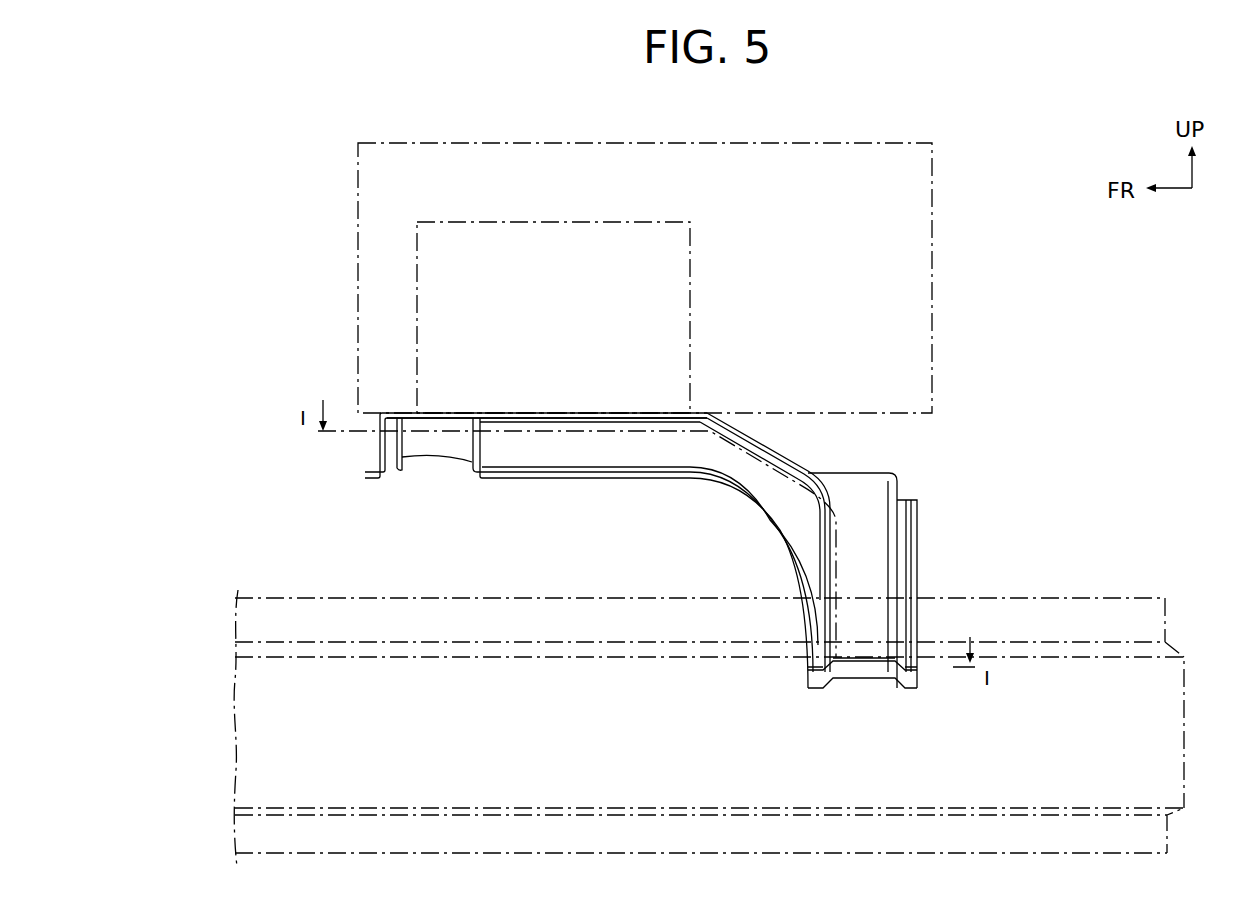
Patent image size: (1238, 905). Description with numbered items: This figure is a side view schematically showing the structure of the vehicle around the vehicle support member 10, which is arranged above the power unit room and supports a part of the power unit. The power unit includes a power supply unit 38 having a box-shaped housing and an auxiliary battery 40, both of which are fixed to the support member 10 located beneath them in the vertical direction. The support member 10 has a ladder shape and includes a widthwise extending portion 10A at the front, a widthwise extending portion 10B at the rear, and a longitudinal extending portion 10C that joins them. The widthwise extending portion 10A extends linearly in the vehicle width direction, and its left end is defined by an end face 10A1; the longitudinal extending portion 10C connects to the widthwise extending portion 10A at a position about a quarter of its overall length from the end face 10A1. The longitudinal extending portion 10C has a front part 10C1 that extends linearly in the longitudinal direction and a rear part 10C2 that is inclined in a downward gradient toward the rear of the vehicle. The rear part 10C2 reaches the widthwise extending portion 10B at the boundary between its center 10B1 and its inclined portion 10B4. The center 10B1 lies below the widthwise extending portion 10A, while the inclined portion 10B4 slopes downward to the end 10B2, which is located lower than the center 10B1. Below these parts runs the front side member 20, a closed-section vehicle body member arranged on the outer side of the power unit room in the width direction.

The vehicle support member 10 is at (716, 544).
The widthwise extending portion 10A is at (536, 432).
The end face 10A1 is at (410, 460).
The longitudinal extending portion 10C is at (608, 512).
The front part 10C1 is at (547, 412).
The rear part 10C2 is at (747, 434).
The widthwise extending portion 10B is at (937, 589).
The center 10B1 is at (848, 478).
The end 10B2 is at (860, 679).
The inclined portion 10B4 is at (876, 563).
The front side member 20 is at (1108, 598).
The power supply unit 38 is at (933, 178).
The auxiliary battery 40 is at (692, 248).